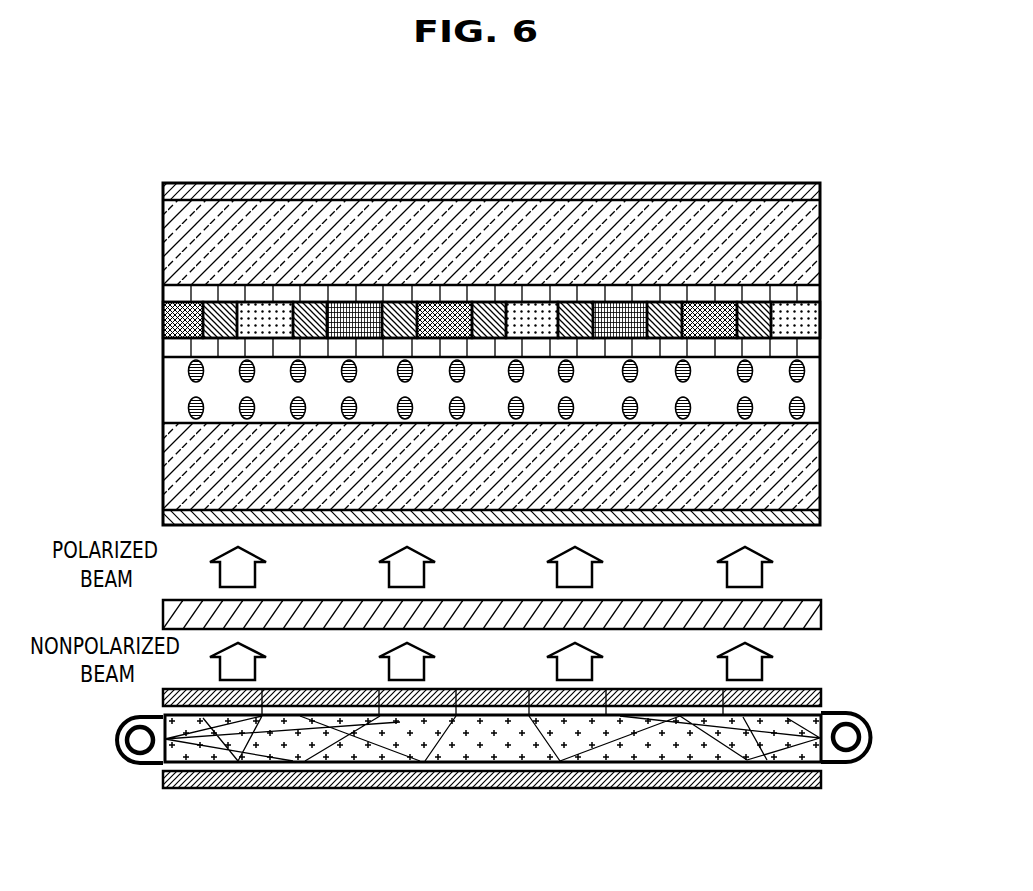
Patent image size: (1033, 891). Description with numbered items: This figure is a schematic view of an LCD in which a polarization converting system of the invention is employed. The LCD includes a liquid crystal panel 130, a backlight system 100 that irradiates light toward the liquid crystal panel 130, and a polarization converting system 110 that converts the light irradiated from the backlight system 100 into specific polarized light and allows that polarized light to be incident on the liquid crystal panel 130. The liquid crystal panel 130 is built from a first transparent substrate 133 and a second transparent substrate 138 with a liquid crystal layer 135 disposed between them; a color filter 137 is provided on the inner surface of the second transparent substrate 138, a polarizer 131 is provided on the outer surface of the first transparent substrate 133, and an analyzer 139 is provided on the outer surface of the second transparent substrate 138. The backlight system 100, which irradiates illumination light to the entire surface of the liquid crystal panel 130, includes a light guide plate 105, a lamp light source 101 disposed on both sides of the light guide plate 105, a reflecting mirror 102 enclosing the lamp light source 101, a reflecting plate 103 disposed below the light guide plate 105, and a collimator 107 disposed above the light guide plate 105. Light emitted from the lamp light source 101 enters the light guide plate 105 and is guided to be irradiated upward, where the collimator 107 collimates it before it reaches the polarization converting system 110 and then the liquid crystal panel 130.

The backlight system 100 is at (118, 693).
The lamp light source 101 is at (858, 732).
The reflecting mirror 102 is at (840, 765).
The reflecting plate 103 is at (715, 788).
The light guide plate 105 is at (630, 748).
The collimator 107 is at (818, 692).
The polarization converting system 110 is at (165, 614).
The liquid crystal panel 130 is at (155, 185).
The polarizer 131 is at (815, 518).
The first transparent substrate 133 is at (812, 466).
The liquid crystal layer 135 is at (812, 391).
The color filter 137 is at (818, 321).
The second transparent substrate 138 is at (812, 244).
The analyzer 139 is at (815, 191).